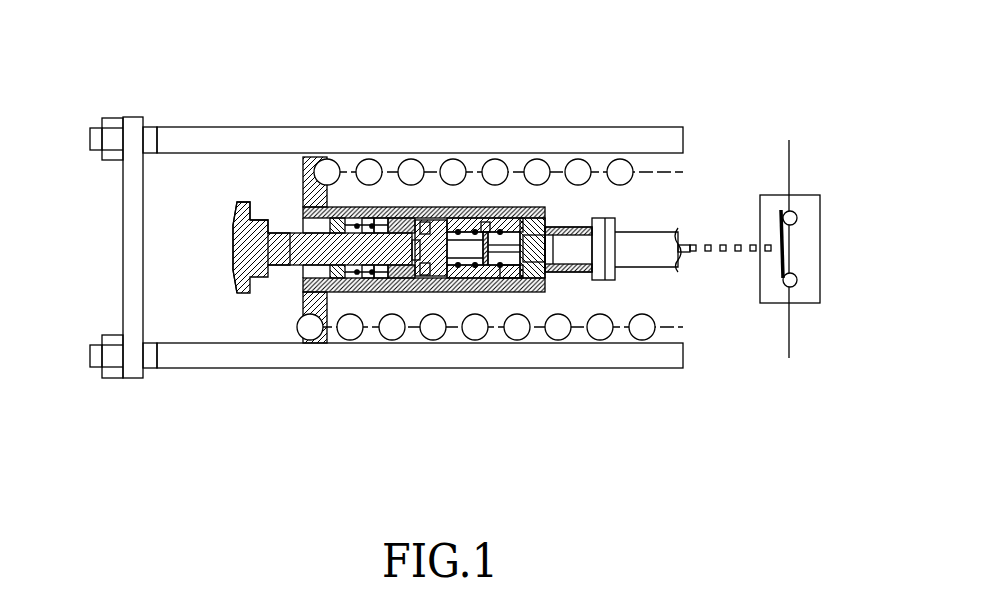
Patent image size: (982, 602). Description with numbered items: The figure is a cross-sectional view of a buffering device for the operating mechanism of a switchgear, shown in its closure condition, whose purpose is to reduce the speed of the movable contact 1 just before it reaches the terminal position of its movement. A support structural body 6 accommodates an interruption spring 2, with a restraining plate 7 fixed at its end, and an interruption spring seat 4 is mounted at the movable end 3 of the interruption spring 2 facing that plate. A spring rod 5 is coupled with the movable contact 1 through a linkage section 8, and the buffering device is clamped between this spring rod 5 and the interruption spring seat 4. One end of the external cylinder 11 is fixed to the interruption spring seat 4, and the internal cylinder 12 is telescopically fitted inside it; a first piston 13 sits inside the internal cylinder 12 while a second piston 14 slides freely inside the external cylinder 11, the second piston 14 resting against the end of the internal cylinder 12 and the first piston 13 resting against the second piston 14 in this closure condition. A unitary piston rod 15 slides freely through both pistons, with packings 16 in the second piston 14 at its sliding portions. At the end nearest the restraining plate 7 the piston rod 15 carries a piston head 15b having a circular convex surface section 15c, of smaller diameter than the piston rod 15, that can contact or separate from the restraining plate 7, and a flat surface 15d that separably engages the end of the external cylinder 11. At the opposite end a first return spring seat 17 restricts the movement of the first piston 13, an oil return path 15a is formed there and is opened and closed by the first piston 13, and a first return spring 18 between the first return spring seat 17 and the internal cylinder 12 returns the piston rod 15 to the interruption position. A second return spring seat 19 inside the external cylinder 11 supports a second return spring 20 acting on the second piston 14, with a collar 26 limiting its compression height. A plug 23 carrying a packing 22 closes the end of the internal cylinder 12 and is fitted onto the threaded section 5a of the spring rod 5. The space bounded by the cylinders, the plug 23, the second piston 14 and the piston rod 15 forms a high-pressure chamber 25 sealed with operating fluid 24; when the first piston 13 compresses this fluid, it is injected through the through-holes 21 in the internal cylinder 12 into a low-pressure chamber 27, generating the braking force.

The movable contact 1 is at (781, 212).
The interruption spring 2 is at (584, 168).
The movable end 3 is at (413, 163).
The interruption spring seat 4 is at (307, 322).
The spring rod 5 is at (652, 243).
The threaded section 5a is at (568, 185).
The support structural body 6 is at (626, 140).
The restraining plate 7 is at (137, 118).
The linkage section 8 is at (742, 244).
The external cylinder 11 is at (517, 207).
The internal cylinder 12 is at (473, 247).
The first piston 13 is at (427, 222).
The second piston 14 is at (390, 222).
The piston rod 15 is at (282, 231).
The oil return path 15a is at (471, 382).
The piston head 15b is at (237, 225).
The circular convex surface section 15c is at (234, 250).
The flat surface 15d is at (262, 214).
The packings 16 is at (395, 217).
The first return spring seat 17 is at (411, 362).
The first return spring 18 is at (510, 292).
The second return spring seat 19 is at (333, 292).
The second return spring 20 is at (368, 290).
The through-holes 21 is at (452, 292).
The packing 22 is at (568, 348).
The plug 23 is at (552, 290).
The operating fluid 24 is at (503, 207).
The high-pressure chamber 25 is at (503, 292).
The collar 26 is at (376, 292).
The low-pressure chamber 27 is at (483, 228).